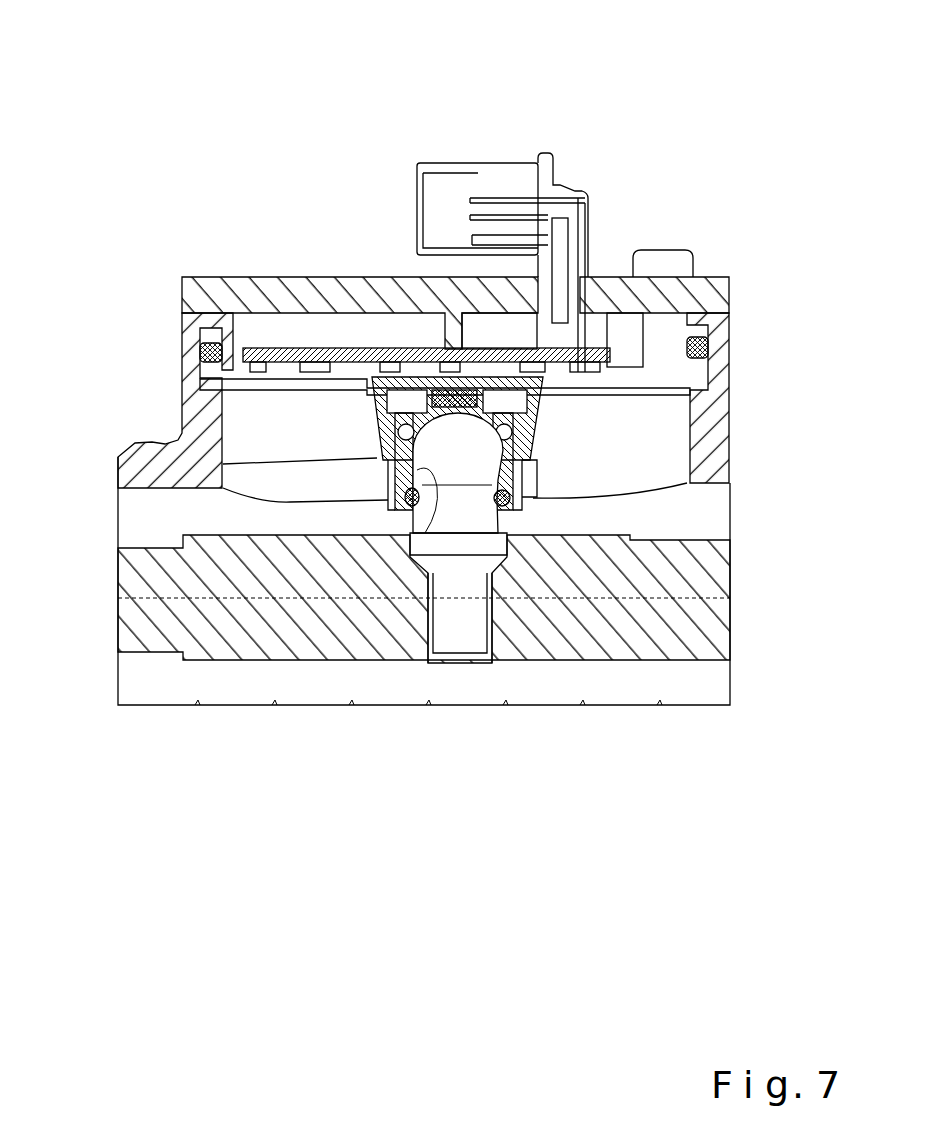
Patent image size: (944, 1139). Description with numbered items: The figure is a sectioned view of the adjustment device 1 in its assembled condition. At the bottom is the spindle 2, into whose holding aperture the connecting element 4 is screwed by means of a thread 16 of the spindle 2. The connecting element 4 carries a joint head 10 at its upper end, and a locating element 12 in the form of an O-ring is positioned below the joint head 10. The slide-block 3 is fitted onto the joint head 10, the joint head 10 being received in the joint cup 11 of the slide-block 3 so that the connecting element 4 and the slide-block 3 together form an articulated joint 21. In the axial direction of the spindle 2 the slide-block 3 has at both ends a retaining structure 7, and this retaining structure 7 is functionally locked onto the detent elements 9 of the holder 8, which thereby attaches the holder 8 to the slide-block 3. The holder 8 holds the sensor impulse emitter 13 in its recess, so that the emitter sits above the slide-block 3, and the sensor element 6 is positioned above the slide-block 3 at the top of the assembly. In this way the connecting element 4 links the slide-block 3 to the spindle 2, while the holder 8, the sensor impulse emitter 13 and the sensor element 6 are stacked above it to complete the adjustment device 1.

The adjustment device 1 is at (195, 163).
The spindle 2 is at (370, 663).
The slide-block 3 is at (388, 497).
The connecting element 4 is at (460, 623).
The sensor element 6 is at (377, 178).
The retaining structure 7 is at (378, 452).
The holder 8 is at (590, 372).
The detent elements 9 is at (126, 451).
The joint head 10 is at (467, 453).
The joint cup 11 is at (412, 533).
The locating element 12 is at (512, 498).
The sensor impulse emitter 13 is at (445, 323).
The thread 16 is at (433, 620).
The articulated joint 21 is at (553, 440).